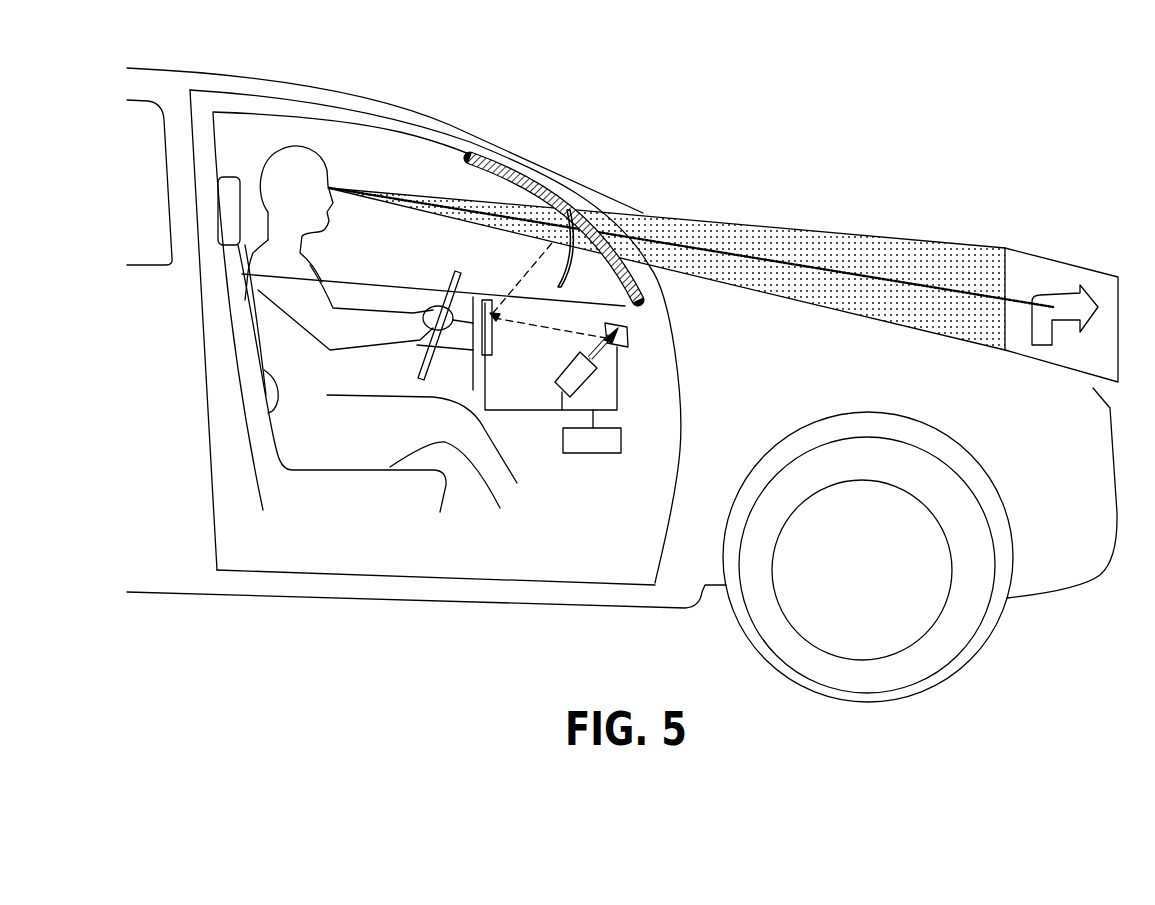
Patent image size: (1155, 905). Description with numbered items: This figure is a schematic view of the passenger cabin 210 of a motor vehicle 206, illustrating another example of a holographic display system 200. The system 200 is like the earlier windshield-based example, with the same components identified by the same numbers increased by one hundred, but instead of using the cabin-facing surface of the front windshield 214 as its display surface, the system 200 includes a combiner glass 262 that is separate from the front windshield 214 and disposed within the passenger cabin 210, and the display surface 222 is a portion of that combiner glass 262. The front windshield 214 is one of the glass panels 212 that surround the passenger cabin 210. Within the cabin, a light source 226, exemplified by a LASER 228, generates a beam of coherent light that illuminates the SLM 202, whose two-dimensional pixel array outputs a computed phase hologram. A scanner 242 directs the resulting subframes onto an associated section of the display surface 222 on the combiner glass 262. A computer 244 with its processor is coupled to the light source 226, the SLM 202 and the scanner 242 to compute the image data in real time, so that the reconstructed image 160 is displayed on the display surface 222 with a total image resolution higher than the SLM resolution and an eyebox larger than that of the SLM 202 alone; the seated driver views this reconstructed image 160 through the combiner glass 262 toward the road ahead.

The motor vehicle 206 is at (76, 67).
The passenger cabin 210 is at (382, 170).
The display surface 222 is at (512, 187).
The glass panels 212 is at (560, 197).
The front windshield 214 is at (527, 171).
The holographic display system 200 is at (614, 477).
The scanner 242 is at (487, 300).
The combiner glass 262 is at (565, 270).
The spatial light modulator (SLM) 202 is at (628, 338).
The light source 226 is at (672, 365).
The LASER 228 is at (588, 385).
The computer 244 is at (583, 457).
The reconstructed image 160 is at (1043, 240).